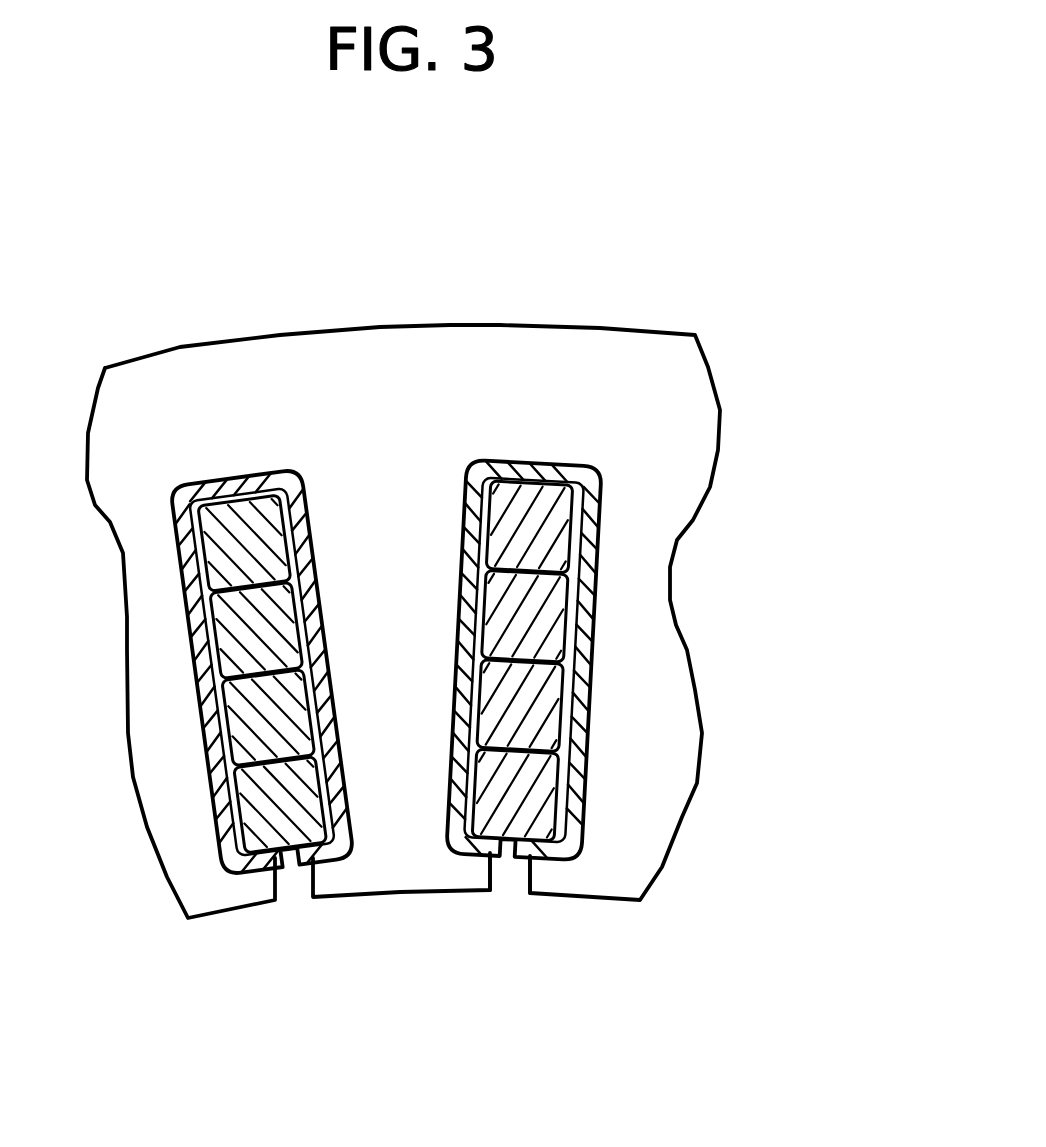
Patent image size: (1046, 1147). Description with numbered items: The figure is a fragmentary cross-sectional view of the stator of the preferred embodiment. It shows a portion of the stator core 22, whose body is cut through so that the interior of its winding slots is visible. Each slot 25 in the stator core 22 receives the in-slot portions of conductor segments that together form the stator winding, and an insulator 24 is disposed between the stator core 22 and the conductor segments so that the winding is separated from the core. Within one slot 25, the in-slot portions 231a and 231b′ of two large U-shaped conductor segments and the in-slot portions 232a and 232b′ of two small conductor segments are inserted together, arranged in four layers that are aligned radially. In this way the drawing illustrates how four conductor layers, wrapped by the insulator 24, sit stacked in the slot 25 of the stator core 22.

The stator core 22 is at (428, 355).
The insulator 24 is at (577, 472).
The in-slot portion 231b′ is at (553, 547).
The in-slot portion 232b′ is at (550, 607).
The in-slot portion 232a is at (535, 710).
The in-slot portion 231a is at (530, 807).
The slot 25 is at (507, 855).